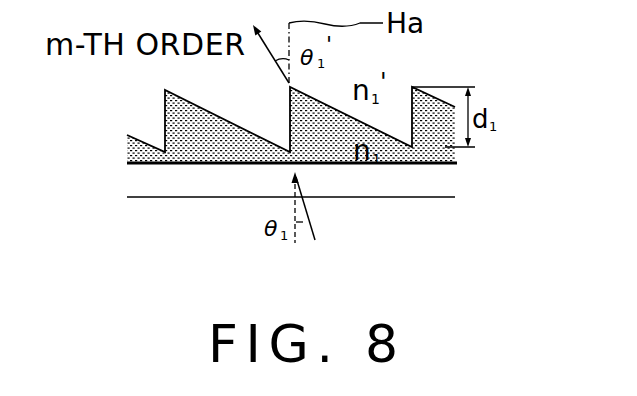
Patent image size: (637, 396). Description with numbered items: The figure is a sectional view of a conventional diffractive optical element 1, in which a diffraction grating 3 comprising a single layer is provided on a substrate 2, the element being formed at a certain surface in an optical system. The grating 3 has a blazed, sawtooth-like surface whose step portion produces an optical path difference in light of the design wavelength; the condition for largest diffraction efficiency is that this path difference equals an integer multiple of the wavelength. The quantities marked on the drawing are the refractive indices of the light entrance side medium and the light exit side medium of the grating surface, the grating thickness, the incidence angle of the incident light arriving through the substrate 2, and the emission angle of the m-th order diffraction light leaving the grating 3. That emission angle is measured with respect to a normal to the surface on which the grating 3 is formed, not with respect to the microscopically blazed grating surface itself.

The diffractive optical element 1 is at (513, 112).
The substrate 2 is at (352, 183).
The diffraction grating 3 is at (183, 133).